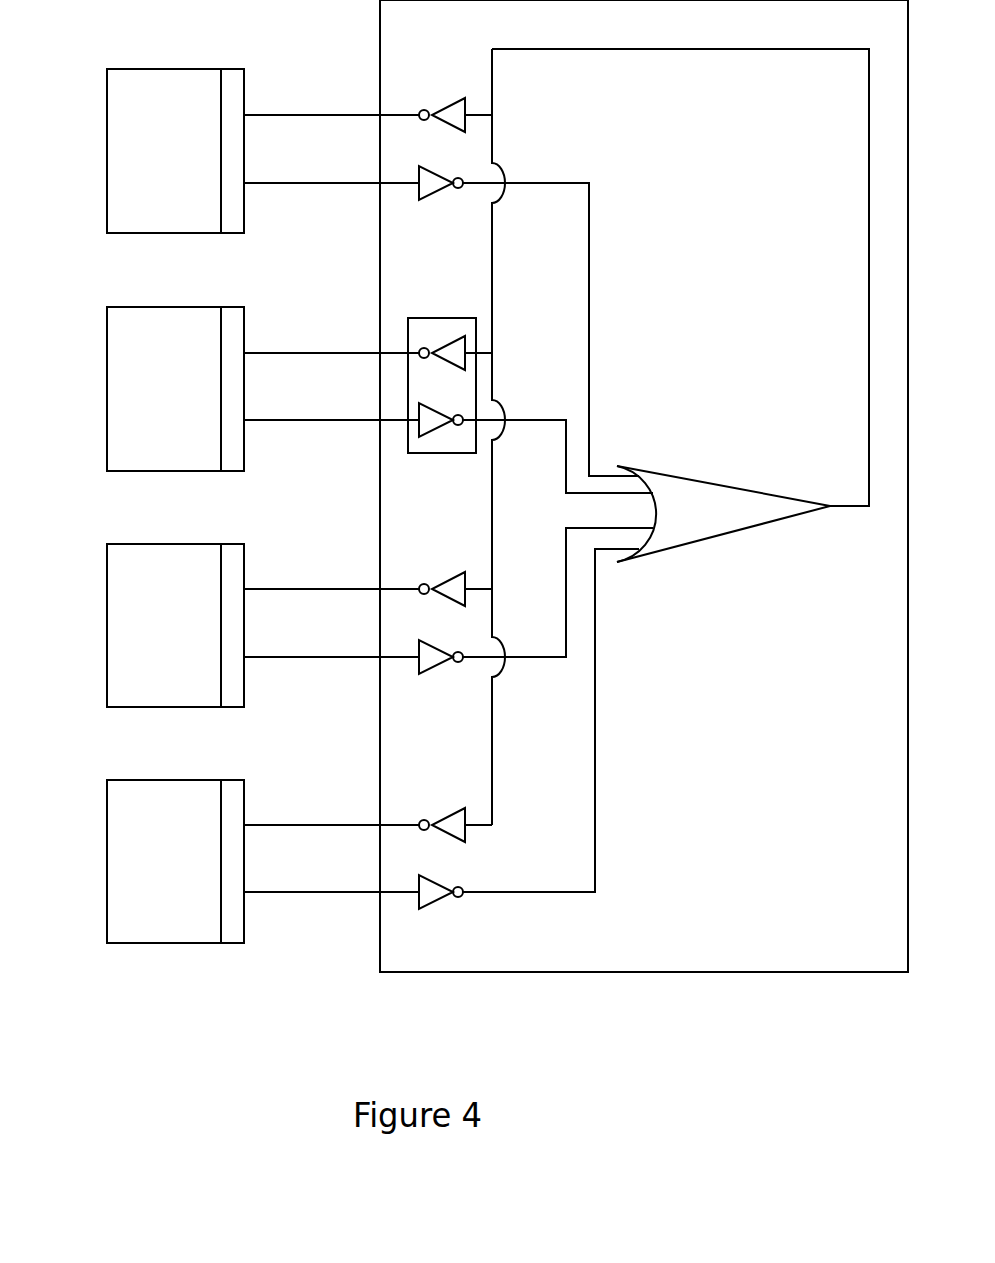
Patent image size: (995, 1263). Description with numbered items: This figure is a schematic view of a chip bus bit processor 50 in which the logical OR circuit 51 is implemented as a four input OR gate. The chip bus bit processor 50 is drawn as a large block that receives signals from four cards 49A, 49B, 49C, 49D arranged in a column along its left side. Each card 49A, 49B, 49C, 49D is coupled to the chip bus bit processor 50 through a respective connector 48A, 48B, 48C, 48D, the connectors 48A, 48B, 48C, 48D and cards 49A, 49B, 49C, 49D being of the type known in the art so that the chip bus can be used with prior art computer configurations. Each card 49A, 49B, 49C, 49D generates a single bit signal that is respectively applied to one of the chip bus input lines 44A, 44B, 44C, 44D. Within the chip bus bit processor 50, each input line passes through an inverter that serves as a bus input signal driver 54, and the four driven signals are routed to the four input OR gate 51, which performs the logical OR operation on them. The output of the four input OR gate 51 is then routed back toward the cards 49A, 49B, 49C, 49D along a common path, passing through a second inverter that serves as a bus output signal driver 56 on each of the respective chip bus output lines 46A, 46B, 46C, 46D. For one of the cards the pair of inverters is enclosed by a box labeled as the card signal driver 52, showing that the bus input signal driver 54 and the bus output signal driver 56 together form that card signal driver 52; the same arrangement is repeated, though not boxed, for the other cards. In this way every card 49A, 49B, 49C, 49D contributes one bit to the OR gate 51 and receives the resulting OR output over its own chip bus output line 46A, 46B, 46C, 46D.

The chip bus bit processor 50 is at (397, 41).
The card 49A is at (107, 124).
The card 49B is at (107, 362).
The card 49C is at (107, 599).
The card 49D is at (107, 835).
The connector 48A is at (243, 233).
The connector 48B is at (243, 471).
The connector 48C is at (243, 707).
The connector 48D is at (243, 943).
The chip bus output line 46A is at (295, 115).
The chip bus output line 46B is at (368, 333).
The chip bus output line 46C is at (295, 589).
The chip bus output line 46D is at (295, 825).
The chip bus input line 44A is at (307, 183).
The chip bus input line 44B is at (448, 459).
The chip bus input line 44C is at (307, 657).
The chip bus input line 44D is at (307, 892).
The logical OR circuit 51 is at (713, 537).
The card signal driver 52 is at (422, 318).
The bus input signal driver 54 is at (438, 430).
The bus output signal driver 56 is at (447, 337).